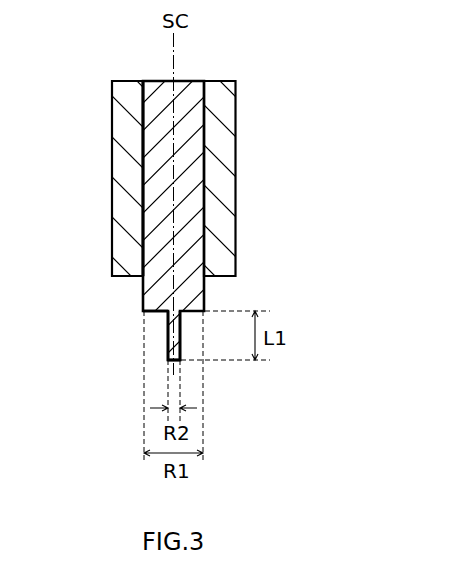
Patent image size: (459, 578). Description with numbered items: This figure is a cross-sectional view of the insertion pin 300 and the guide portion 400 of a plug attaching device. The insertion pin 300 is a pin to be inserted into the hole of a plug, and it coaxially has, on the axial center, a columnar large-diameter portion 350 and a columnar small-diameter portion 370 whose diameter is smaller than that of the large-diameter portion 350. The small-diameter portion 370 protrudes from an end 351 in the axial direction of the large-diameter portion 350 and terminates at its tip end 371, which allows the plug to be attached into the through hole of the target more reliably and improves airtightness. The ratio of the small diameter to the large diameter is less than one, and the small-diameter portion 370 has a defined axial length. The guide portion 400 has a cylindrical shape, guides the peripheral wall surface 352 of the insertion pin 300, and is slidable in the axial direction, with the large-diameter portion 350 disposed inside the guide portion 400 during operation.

The insertion pin 300 is at (197, 80).
The guide portion 400 is at (237, 110).
The large-diameter portion 350 is at (195, 170).
The peripheral wall surface 352 is at (143, 143).
The end 351 is at (161, 311).
The small-diameter portion 370 is at (178, 330).
The tip end face 371 is at (180, 362).